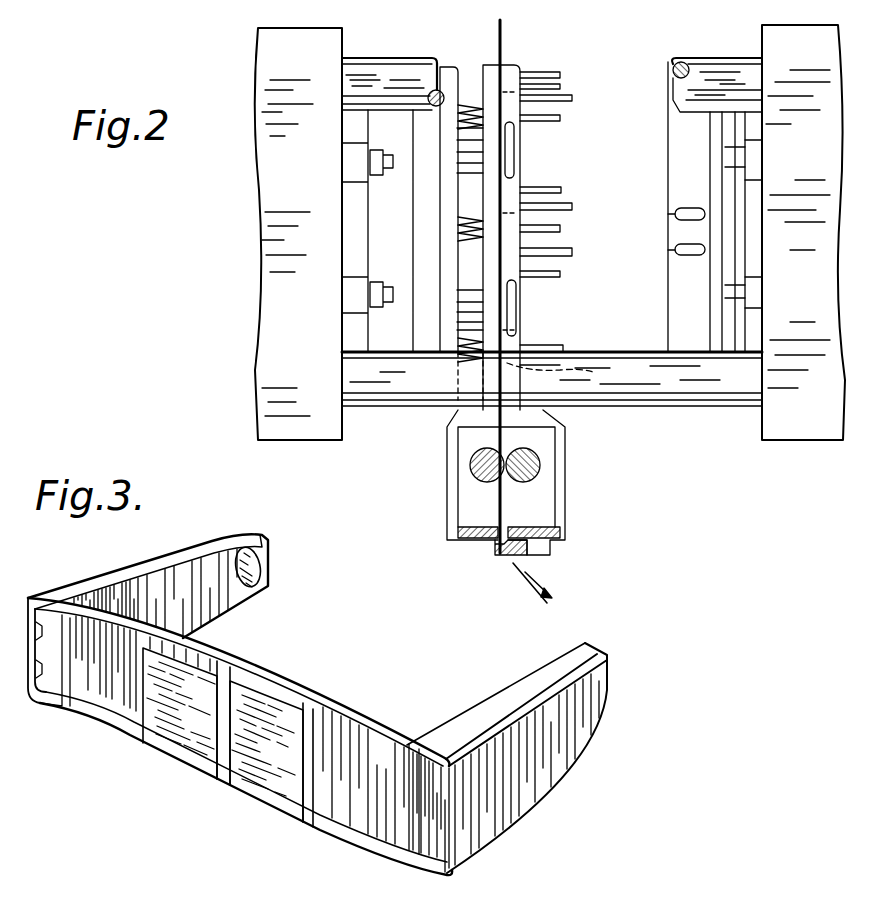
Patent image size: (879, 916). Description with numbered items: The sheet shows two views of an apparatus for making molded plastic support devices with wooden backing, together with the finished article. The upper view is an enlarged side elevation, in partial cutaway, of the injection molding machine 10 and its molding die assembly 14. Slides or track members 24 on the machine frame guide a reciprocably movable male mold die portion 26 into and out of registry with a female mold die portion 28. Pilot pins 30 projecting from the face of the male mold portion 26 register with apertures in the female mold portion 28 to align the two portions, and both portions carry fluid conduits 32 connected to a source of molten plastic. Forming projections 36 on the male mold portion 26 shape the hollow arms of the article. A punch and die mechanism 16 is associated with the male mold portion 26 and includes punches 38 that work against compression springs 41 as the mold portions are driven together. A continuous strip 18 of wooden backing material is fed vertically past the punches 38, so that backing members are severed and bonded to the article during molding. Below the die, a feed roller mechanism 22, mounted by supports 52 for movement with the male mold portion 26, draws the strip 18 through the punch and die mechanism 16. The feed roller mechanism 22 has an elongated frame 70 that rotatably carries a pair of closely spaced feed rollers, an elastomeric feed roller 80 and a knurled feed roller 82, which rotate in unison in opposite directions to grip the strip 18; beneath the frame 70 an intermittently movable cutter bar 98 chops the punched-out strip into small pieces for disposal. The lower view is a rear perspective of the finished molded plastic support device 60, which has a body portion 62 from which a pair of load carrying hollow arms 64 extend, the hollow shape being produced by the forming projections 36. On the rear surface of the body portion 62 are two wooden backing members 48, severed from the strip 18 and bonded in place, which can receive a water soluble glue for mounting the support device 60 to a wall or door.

In FIG. 2, the injection molding machine 10 is at (232, 54).
In FIG. 2, the molding die assembly 14 is at (661, 60).
In FIG. 2, the punch and die mechanism 16 is at (443, 342).
In FIG. 2, the continuous strip of backing material 18 is at (503, 33).
In FIG. 2, the feed roller mechanism 22 is at (572, 515).
In FIG. 2, the slides or track members 24 is at (388, 74).
In FIG. 2, the male mold die member or portion 26 is at (512, 67).
In FIG. 2, the female mold die member or portion 28 is at (680, 145).
In FIG. 2, the pilot pins 30 is at (560, 72).
In FIG. 2, the fluid conduits 32 is at (513, 148).
In FIG. 2, the forming projections 36 is at (570, 97).
In FIG. 2, the punches 38 is at (466, 160).
In FIG. 2, the compression springs 41 is at (458, 127).
In FIG. 3, the wooden backing members 48 is at (247, 770).
In FIG. 2, the supports 52 is at (452, 415).
In FIG. 3, the molded plastic support device 60 is at (560, 798).
In FIG. 3, the body portion 62 is at (273, 683).
In FIG. 3, the load carrying hollow arms 64 is at (232, 606).
In FIG. 2, the frame 70 is at (444, 525).
In FIG. 2, the feed roller 80 is at (473, 475).
In FIG. 2, the feed roller 82 is at (540, 478).
In FIG. 2, the cutter bar 98 is at (493, 552).